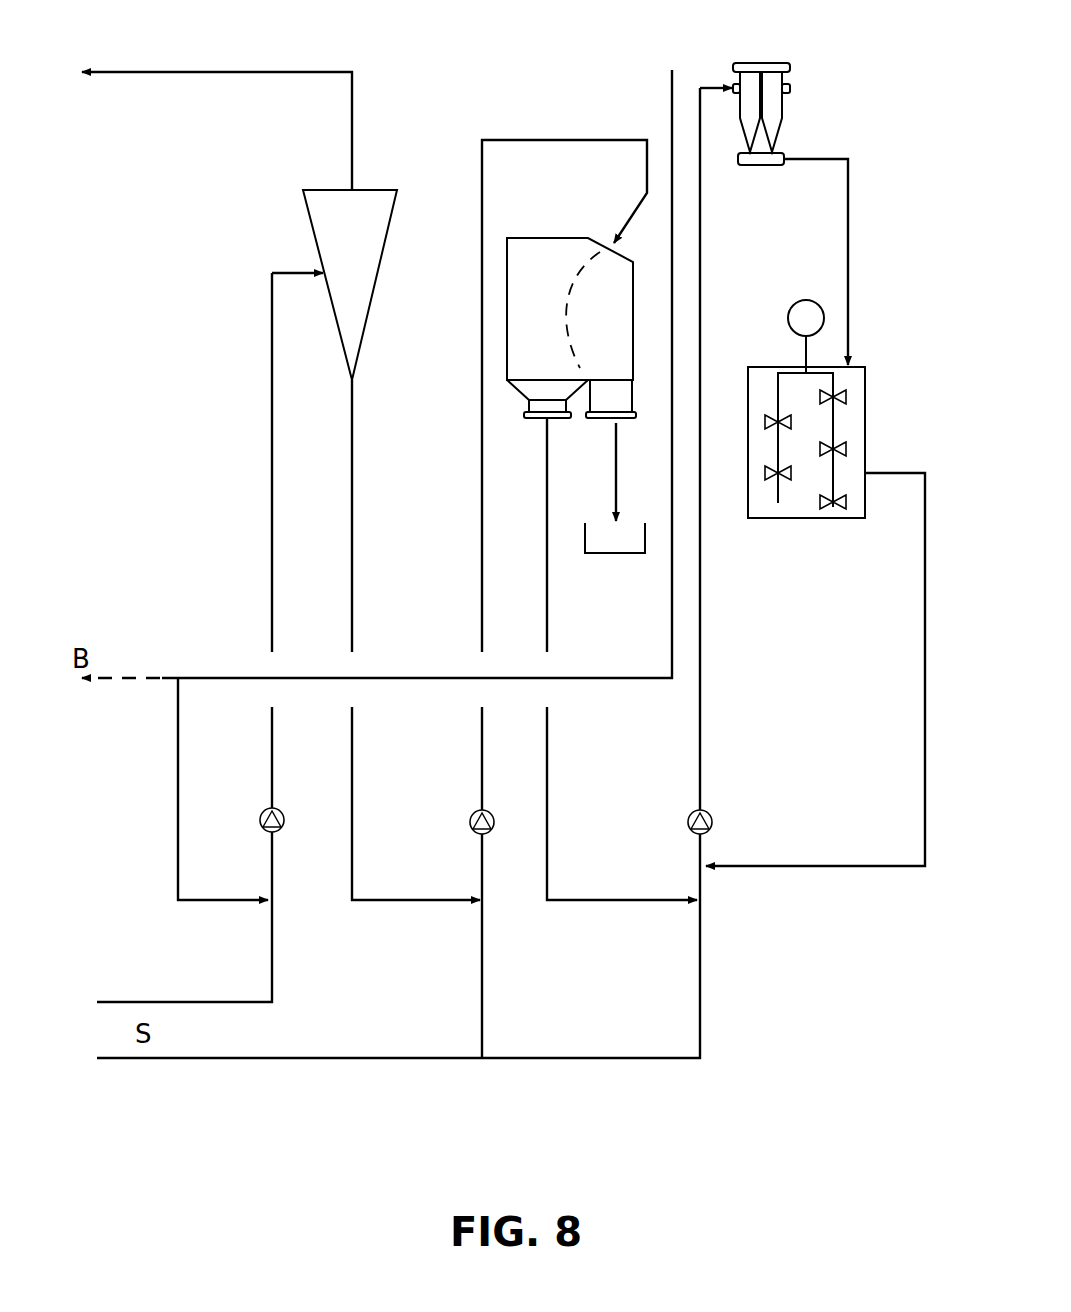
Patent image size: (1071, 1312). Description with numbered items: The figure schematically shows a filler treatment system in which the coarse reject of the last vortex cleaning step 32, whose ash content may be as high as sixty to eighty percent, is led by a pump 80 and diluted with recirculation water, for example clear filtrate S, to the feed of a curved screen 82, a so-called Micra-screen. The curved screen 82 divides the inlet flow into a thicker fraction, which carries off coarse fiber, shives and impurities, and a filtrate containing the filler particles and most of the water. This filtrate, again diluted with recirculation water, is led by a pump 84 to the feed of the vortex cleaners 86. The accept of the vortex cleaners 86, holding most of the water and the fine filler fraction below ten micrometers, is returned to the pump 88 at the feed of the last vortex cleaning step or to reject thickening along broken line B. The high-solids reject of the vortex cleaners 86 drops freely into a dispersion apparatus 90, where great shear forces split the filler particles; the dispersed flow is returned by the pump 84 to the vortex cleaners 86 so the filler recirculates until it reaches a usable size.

The last vortex cleaning step 32 is at (335, 230).
The pump 80 is at (470, 821).
The curved screen 82 is at (532, 287).
The pump 84 is at (688, 821).
The vortex cleaners 86 is at (765, 68).
The pump 88 is at (258, 822).
The dispersion apparatus 90 is at (843, 426).